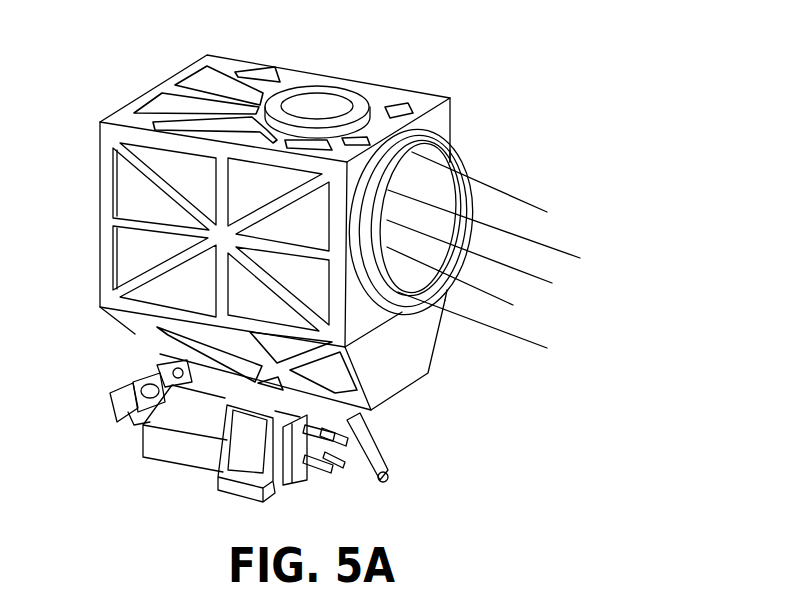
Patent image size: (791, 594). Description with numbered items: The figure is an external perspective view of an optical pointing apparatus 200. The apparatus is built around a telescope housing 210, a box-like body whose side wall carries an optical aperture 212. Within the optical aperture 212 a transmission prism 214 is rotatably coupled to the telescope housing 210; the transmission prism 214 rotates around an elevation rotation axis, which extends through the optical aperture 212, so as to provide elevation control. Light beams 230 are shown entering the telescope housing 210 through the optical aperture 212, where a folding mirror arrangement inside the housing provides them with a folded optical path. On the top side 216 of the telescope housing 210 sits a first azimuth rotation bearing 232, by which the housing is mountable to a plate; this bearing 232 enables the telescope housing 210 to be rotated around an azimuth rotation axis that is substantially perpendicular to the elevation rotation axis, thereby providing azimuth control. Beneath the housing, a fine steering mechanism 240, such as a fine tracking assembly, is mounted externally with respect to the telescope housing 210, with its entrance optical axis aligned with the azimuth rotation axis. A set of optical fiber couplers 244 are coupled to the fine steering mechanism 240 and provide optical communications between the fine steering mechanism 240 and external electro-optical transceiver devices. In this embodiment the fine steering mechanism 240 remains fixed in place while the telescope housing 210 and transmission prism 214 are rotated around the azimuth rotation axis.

The optical pointing apparatus 200 is at (503, 53).
The telescope housing 210 is at (130, 198).
The optical aperture 212 is at (458, 154).
The transmission prism 214 is at (447, 301).
The top side 216 is at (215, 88).
The light beams 230 is at (545, 240).
The first azimuth rotation bearing 232 is at (365, 100).
The fine steering mechanism 240 is at (180, 453).
The optical fiber couplers 244 is at (123, 381).